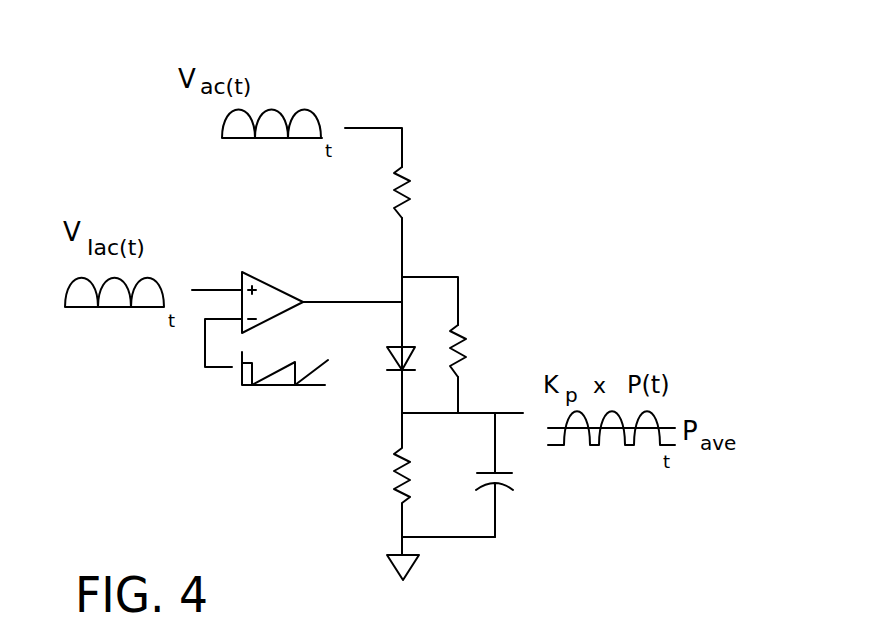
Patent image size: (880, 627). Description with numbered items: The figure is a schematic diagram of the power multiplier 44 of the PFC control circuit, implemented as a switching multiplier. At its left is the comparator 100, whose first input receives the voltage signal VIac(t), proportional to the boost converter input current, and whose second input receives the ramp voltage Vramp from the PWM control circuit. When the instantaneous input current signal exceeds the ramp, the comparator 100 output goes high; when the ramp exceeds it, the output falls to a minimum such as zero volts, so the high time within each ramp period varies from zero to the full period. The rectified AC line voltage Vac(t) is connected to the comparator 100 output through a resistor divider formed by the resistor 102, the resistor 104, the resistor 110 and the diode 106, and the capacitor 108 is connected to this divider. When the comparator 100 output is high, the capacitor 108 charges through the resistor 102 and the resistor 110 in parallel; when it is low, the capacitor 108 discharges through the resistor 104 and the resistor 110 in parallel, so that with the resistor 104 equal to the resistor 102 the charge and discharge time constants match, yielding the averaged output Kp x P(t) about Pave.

The power multiplier 44 is at (580, 59).
The comparator 100 is at (270, 286).
The resistor 102 is at (412, 198).
The resistor 104 is at (461, 357).
The diode 106 is at (386, 350).
The capacitor 108 is at (502, 487).
The resistor 110 is at (397, 476).